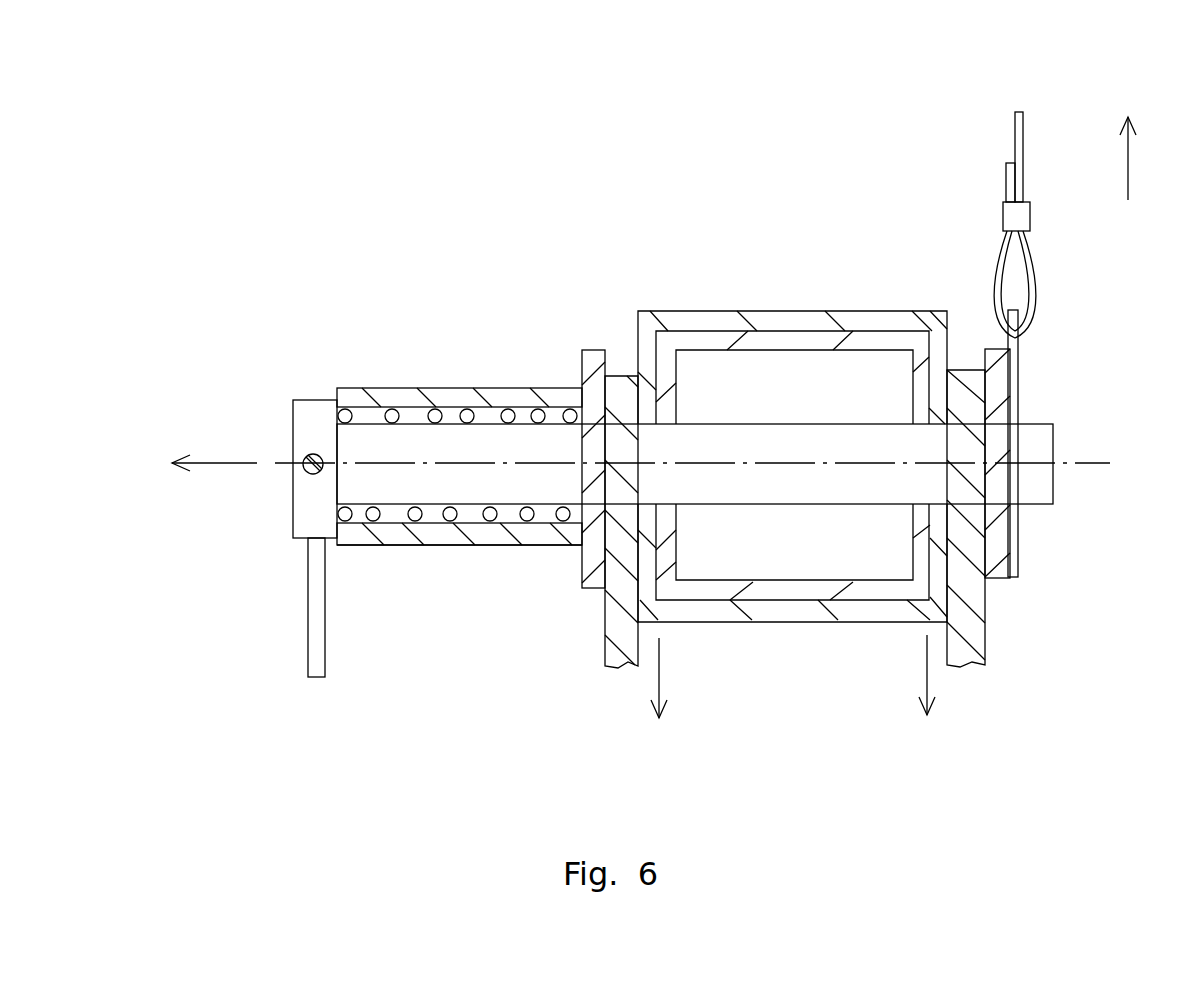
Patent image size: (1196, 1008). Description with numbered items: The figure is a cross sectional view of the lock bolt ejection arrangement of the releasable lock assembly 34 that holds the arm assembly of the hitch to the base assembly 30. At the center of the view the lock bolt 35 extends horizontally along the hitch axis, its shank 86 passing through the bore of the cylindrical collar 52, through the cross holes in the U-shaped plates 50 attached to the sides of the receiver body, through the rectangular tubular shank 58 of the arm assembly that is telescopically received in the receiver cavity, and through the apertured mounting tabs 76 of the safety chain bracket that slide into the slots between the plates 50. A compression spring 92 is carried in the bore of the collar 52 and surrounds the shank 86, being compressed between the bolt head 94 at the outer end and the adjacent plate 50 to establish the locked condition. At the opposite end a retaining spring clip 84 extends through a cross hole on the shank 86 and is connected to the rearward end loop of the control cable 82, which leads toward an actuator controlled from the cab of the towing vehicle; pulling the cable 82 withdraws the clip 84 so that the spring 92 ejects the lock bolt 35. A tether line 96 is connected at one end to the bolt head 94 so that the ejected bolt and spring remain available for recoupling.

The base assembly 30 is at (697, 310).
The releasable lock assembly 34 is at (427, 388).
The lock bolt 35 is at (308, 397).
The U-shaped plates 50 is at (585, 357).
The cylindrical collar 52 is at (360, 535).
The tubular shank 58 is at (783, 340).
The mounting tabs 76 is at (620, 633).
The control cable 82 is at (1021, 127).
The retaining spring clip 84 is at (1013, 368).
The shank of the lock bolt 86 is at (780, 482).
The compression spring 92 is at (490, 517).
The bolt head 94 is at (315, 437).
The tether line 96 is at (318, 637).